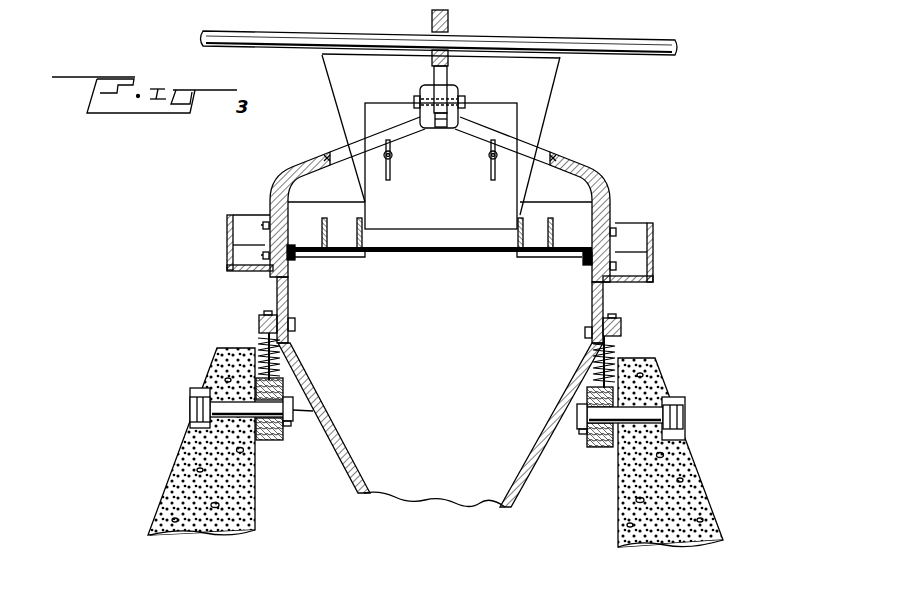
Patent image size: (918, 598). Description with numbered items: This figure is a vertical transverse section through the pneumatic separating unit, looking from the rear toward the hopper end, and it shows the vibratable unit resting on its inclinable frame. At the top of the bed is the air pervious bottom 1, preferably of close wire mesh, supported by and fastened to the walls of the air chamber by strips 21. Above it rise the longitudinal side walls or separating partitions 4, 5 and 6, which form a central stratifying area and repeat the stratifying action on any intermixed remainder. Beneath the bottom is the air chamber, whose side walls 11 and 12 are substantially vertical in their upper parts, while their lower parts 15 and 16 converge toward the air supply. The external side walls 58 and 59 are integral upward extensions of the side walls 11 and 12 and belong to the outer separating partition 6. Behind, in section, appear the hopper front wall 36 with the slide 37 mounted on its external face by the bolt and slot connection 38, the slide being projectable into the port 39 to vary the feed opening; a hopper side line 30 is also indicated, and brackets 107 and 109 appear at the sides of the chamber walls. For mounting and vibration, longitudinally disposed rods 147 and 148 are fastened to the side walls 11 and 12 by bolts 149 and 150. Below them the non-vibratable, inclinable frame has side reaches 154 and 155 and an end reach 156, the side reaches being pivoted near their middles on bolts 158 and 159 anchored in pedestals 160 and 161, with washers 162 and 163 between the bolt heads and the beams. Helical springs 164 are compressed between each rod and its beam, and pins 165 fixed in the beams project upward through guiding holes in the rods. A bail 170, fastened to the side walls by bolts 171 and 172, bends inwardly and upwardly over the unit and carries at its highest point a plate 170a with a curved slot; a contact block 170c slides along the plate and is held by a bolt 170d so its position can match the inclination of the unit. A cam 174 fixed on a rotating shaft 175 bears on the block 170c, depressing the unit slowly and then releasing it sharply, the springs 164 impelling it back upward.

The air pervious bottom 1 is at (420, 253).
The separating partition 4 is at (362, 250).
The separating partition 5 is at (328, 220).
The separating partition 6 is at (292, 228).
The side wall of air chamber 11 is at (288, 300).
The side wall of air chamber 12 is at (598, 305).
The lower part of side wall 15 is at (346, 446).
The lower part of side wall 16 is at (528, 457).
The strip 21 is at (294, 258).
The chute side 30 is at (553, 90).
The front wall of hopper 36 is at (345, 82).
The slide 37 is at (520, 117).
The bolt and slot connection 38 is at (494, 162).
The port 39 is at (442, 242).
The external side wall 58 is at (278, 185).
The external side wall 59 is at (582, 240).
The left bracket channel 107 is at (227, 231).
The right bracket channel 109 is at (652, 249).
The rod 147 is at (260, 317).
The rod 148 is at (616, 326).
The bolt 149 is at (295, 323).
The bolt 150 is at (586, 332).
The side reach 154 is at (266, 443).
The side reach 155 is at (598, 448).
The end reach 156 is at (314, 420).
The bolt 158 is at (230, 407).
The bolt 159 is at (640, 410).
The pedestal 160 is at (188, 467).
The pedestal 161 is at (680, 473).
The washer 162 is at (287, 428).
The washer 163 is at (586, 438).
The helical spring 164 is at (283, 368).
The pin 165 is at (281, 353).
The bail 170 is at (547, 157).
The plate 170a is at (460, 88).
The contact block 170c is at (437, 128).
The bolt 170d is at (416, 100).
The bolt 171 is at (262, 255).
The bolt 172 is at (608, 240).
The cam 174 is at (449, 22).
The shaft 175 is at (594, 40).